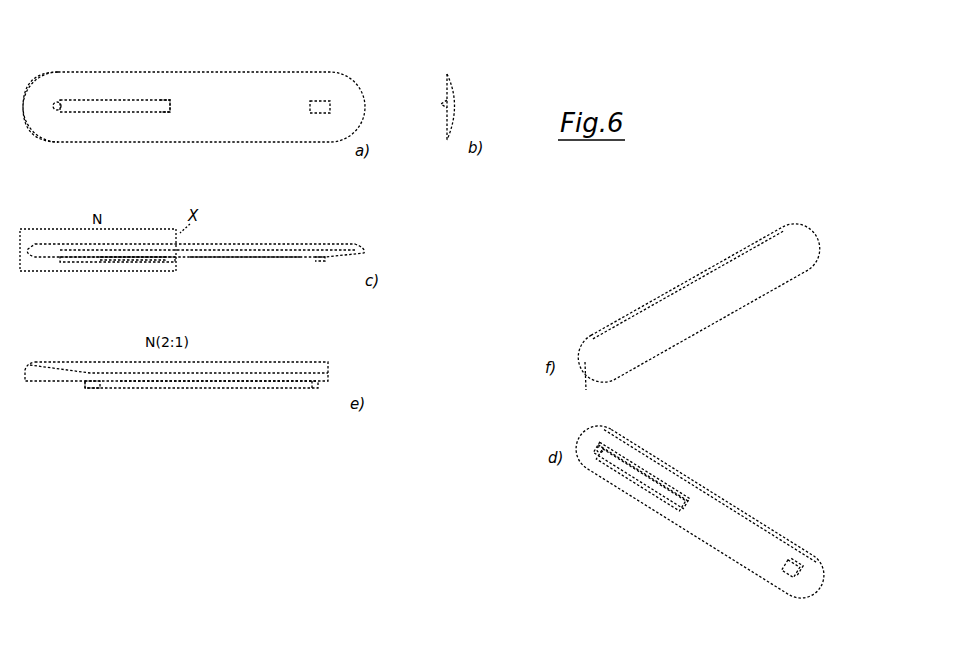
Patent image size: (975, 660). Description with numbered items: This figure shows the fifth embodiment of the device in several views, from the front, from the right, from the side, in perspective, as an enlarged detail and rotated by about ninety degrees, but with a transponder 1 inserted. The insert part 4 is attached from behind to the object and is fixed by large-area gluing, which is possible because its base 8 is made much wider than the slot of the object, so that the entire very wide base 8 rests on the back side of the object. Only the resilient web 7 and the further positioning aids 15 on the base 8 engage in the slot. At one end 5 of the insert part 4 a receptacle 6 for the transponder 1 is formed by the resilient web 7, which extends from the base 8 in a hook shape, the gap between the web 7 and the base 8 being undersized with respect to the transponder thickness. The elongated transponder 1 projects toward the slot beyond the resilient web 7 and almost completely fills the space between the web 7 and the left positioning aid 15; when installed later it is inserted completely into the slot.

The transponder 1 is at (106, 100).
The insert part 4 is at (238, 86).
The end of the insert part 5 is at (60, 150).
The receptacle 6 is at (128, 106).
The resilient web 7 is at (157, 100).
The base 8 is at (213, 122).
The positioning aids 15 is at (60, 100).